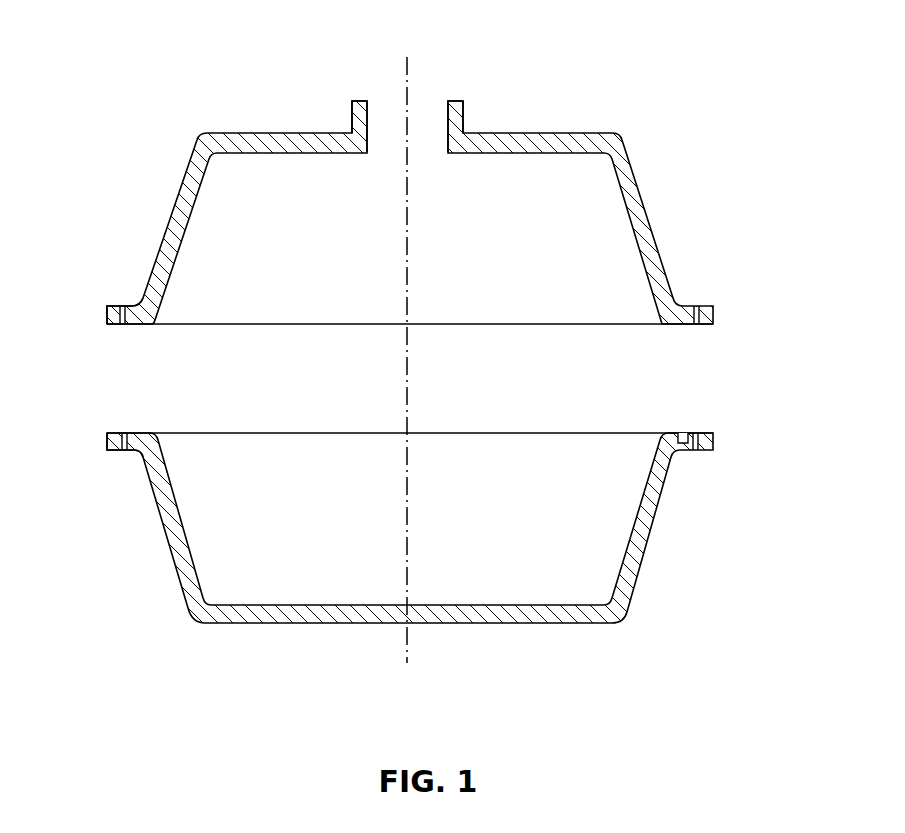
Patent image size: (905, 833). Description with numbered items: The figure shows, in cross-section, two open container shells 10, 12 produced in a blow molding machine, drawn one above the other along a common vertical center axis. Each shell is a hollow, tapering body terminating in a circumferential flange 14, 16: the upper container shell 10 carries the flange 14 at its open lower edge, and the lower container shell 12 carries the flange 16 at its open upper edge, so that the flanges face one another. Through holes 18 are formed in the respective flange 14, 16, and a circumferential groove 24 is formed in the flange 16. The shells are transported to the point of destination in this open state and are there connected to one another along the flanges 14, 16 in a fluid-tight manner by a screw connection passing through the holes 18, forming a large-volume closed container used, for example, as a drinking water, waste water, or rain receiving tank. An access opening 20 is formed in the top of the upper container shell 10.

The upper container shell 10 is at (627, 183).
The lower container shell 12 is at (647, 532).
The circumferential flange 14 is at (137, 306).
The circumferential flange 16 is at (112, 432).
The through holes 18 is at (121, 306).
The access opening 20 is at (460, 113).
The circumferential groove 24 is at (680, 432).